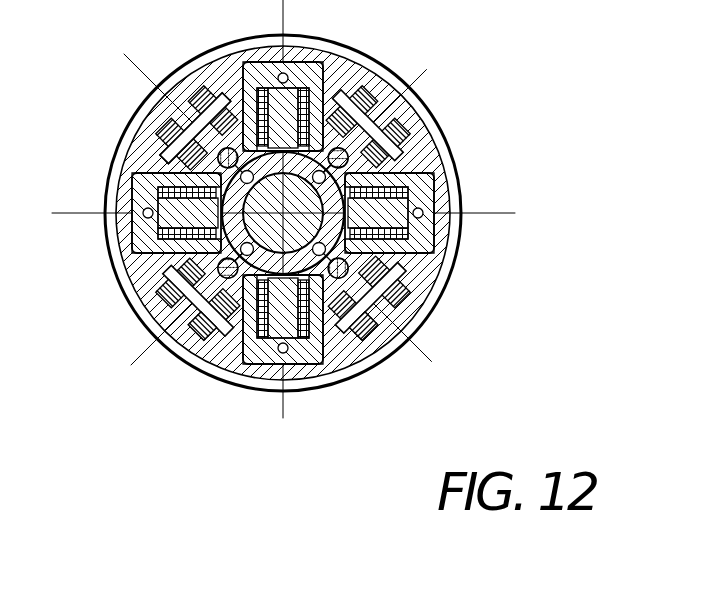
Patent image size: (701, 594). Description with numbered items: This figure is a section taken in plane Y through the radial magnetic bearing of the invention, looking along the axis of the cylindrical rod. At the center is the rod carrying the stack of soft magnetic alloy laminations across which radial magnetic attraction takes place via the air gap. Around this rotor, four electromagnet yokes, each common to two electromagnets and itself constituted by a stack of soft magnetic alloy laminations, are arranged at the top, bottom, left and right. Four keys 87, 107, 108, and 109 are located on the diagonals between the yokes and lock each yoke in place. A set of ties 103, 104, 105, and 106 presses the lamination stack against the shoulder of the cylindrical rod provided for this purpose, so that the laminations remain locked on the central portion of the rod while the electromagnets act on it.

The key 87 is at (375, 117).
The tie 103 is at (412, 90).
The tie 104 is at (172, 157).
The tie 105 is at (167, 282).
The tie 106 is at (397, 257).
The key 107 is at (195, 128).
The key 108 is at (182, 312).
The key 109 is at (375, 332).